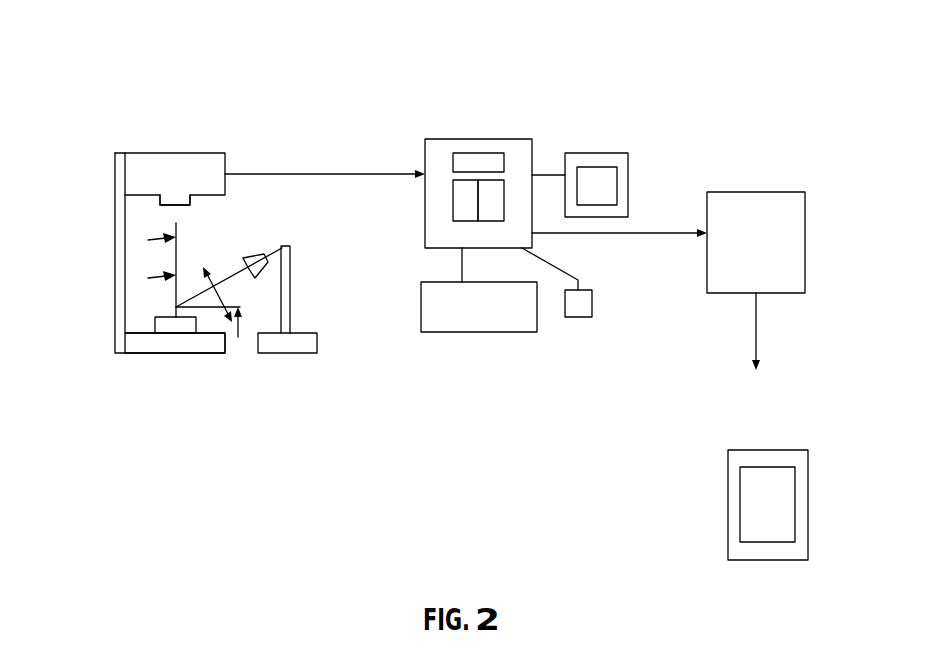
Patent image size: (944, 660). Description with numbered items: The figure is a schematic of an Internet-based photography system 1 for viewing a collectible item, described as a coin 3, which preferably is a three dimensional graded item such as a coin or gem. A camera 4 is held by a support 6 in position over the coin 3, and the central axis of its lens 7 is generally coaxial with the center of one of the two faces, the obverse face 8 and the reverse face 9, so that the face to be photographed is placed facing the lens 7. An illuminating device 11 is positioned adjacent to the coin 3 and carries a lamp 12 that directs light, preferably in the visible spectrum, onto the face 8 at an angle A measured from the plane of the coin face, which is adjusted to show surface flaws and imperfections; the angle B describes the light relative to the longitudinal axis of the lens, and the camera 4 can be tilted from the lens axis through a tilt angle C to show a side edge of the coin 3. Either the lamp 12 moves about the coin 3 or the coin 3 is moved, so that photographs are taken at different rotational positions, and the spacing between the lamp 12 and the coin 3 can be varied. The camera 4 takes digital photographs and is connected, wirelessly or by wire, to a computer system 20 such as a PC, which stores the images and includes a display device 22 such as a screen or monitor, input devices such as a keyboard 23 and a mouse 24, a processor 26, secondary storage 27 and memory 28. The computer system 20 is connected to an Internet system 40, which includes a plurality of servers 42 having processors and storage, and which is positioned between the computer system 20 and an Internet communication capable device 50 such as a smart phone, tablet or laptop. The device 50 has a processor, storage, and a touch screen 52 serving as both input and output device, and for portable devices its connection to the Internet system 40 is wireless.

The Internet-based system 1 is at (77, 137).
The coin 3 is at (157, 322).
The camera 4 is at (177, 153).
The support 6 is at (114, 260).
The lens 7 is at (195, 203).
The obverse face 8 is at (167, 317).
The reverse face 9 is at (170, 333).
The illuminating device 11 is at (292, 260).
The lamp 12 is at (250, 257).
The angle A is at (226, 316).
The angle B is at (153, 278).
The angle C is at (153, 240).
The computer system 20 is at (467, 122).
The display device 22 is at (597, 153).
The keyboard 23 is at (483, 332).
The mouse 24 is at (577, 317).
The processor 26 is at (490, 153).
The secondary storage 27 is at (462, 205).
The memory 28 is at (488, 213).
The Internet system 40 is at (748, 180).
The servers 42 is at (806, 248).
The Internet communication capable device 50 is at (827, 507).
The touch screen 52 is at (753, 503).